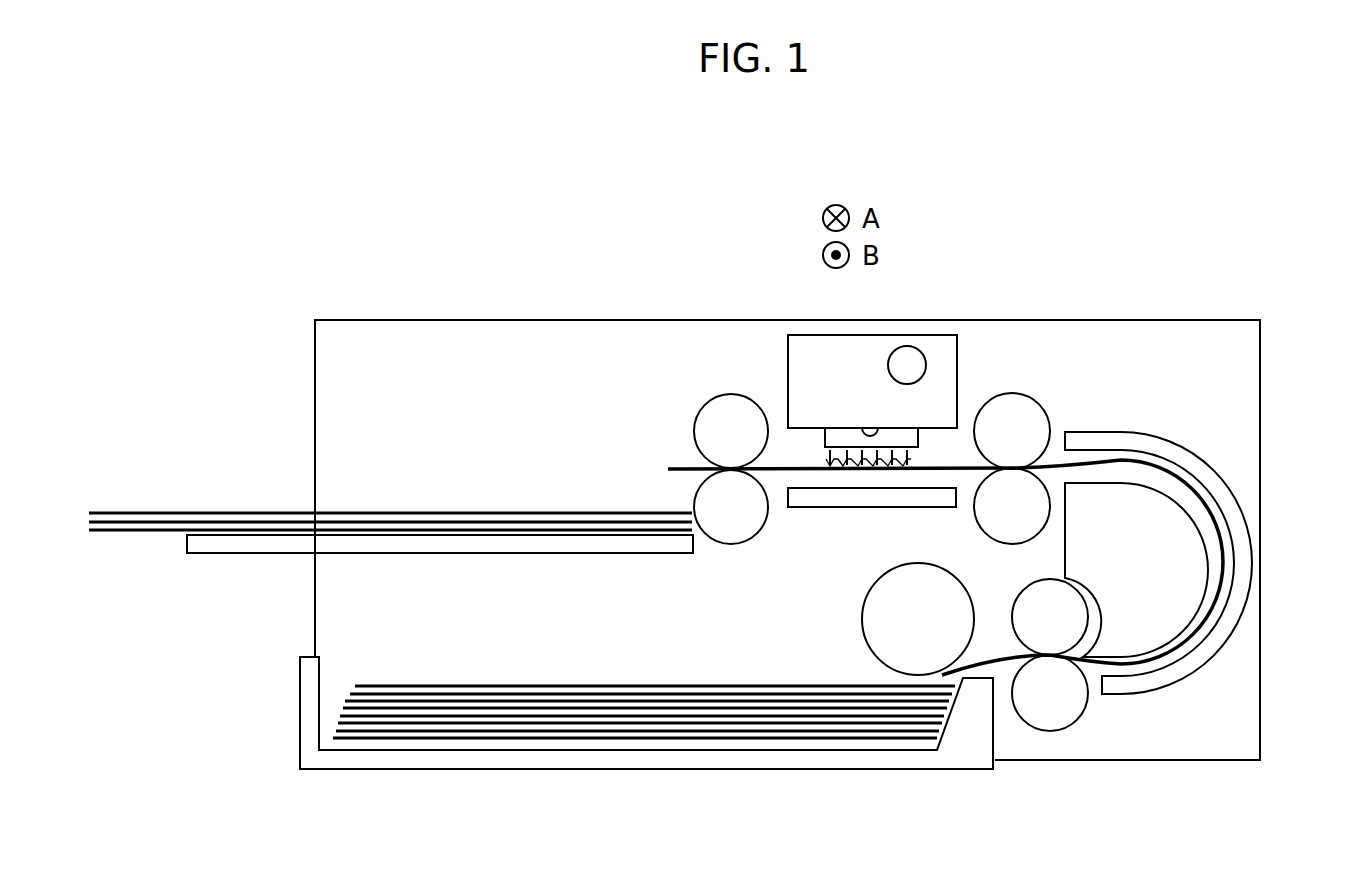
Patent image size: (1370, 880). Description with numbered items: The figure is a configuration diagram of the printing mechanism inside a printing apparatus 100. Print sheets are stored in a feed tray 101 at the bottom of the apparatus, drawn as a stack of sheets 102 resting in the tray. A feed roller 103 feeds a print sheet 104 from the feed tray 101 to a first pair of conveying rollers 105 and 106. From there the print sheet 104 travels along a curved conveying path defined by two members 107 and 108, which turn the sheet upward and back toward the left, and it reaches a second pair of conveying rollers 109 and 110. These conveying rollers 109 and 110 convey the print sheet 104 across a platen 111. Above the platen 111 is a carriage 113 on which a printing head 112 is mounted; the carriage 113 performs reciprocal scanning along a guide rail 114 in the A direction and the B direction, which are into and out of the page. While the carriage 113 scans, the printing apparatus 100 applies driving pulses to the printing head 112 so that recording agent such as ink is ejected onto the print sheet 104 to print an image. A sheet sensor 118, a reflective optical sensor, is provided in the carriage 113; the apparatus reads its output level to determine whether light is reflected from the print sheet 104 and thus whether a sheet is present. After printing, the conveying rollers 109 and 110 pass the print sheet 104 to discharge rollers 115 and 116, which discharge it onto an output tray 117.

The printing apparatus 100 is at (1161, 318).
The feed tray 101 is at (300, 720).
The sheets 102 is at (627, 683).
The feed roller 103 is at (877, 640).
The print sheet 104 is at (973, 673).
The conveying roller 105 is at (1072, 715).
The conveying roller 106 is at (1078, 618).
The member 107 is at (1238, 568).
The member 108 is at (1195, 548).
The conveying roller 109 is at (1030, 505).
The conveying roller 110 is at (1035, 415).
The platen 111 is at (840, 508).
The printing head 112 is at (842, 440).
The carriage 113 is at (840, 340).
The guide rail 114 is at (907, 348).
The discharge roller 115 is at (740, 543).
The discharge roller 116 is at (705, 432).
The output tray 117 is at (203, 550).
The sheet sensor 118 is at (872, 428).